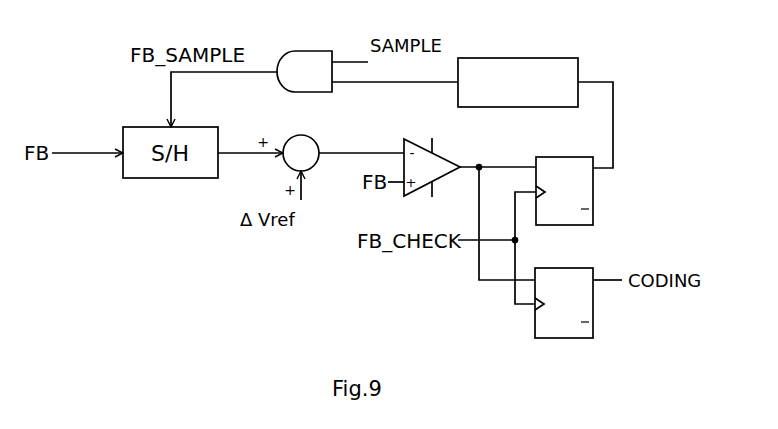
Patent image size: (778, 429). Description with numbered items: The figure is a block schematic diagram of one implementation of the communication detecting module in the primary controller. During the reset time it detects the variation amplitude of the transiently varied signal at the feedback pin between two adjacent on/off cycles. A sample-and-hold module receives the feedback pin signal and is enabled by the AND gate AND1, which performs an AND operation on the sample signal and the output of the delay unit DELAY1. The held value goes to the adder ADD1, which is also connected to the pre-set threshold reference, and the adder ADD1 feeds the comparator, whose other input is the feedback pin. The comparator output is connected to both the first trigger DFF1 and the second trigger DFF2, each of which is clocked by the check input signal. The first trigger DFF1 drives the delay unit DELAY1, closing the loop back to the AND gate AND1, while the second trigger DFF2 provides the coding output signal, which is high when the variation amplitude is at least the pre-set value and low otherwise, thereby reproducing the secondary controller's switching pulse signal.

The AND gate AND1 is at (304, 60).
The adder ADD1 is at (302, 145).
The delay unit DELAY1 is at (518, 82).
The first trigger DFF1 is at (564, 203).
The second trigger DFF2 is at (564, 314).